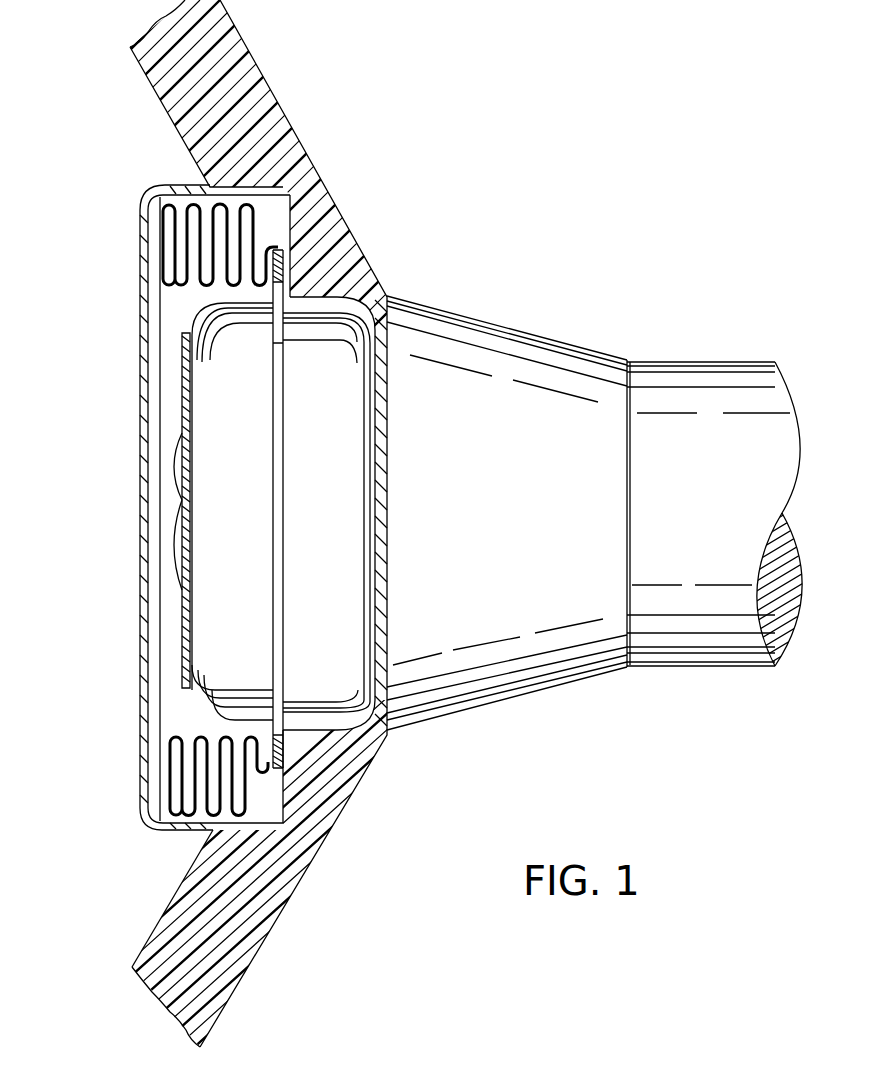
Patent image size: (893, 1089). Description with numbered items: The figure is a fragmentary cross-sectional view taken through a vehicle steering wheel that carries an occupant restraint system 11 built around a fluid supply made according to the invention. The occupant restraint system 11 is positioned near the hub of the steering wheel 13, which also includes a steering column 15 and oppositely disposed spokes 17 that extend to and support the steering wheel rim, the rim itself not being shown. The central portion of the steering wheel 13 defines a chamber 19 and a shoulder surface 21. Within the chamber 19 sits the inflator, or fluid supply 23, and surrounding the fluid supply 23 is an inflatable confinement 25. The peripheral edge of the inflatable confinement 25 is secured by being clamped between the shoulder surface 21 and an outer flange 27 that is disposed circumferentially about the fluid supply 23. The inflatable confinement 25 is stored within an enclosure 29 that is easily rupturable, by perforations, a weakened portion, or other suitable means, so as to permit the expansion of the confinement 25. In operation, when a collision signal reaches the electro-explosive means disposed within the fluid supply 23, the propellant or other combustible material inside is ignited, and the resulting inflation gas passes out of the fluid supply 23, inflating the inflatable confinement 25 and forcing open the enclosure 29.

The occupant restraint system 11 is at (94, 427).
The steering wheel 13 is at (432, 248).
The steering column 15 is at (735, 362).
The spokes 17 is at (273, 88).
The chamber 19 is at (345, 715).
The shoulder surface 21 is at (283, 217).
The fluid supply 23 is at (174, 660).
The inflatable confinement 25 is at (162, 230).
The outer flange 27 is at (273, 615).
The enclosure 29 is at (145, 322).